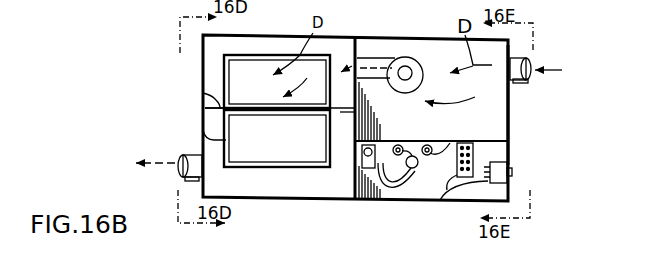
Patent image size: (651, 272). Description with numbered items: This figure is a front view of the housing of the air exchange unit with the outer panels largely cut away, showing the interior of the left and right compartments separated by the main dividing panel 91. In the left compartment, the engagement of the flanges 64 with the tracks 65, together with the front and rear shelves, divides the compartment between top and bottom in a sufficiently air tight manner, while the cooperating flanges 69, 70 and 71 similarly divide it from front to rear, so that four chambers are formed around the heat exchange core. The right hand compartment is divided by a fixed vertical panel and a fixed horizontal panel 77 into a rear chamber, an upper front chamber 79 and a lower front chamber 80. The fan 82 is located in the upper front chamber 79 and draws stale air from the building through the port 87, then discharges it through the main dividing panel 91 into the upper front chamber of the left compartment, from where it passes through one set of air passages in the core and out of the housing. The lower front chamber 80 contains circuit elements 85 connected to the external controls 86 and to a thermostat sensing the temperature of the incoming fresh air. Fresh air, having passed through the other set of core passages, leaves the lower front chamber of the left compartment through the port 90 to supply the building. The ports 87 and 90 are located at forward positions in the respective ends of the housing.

The flanges 64 is at (208, 94).
The tracks 65 is at (218, 107).
The flange 69 is at (203, 131).
The flange 70 is at (247, 55).
The flange 71 is at (273, 50).
The fixed horizontal panel 77 is at (492, 140).
The upper front chamber 79 is at (498, 108).
The lower front chamber 80 is at (495, 150).
The fan 82 is at (387, 63).
The circuit elements 85 is at (457, 177).
The external controls 86 is at (513, 172).
The port 87 is at (532, 58).
The port 90 is at (185, 177).
The main dividing panel 91 is at (355, 44).